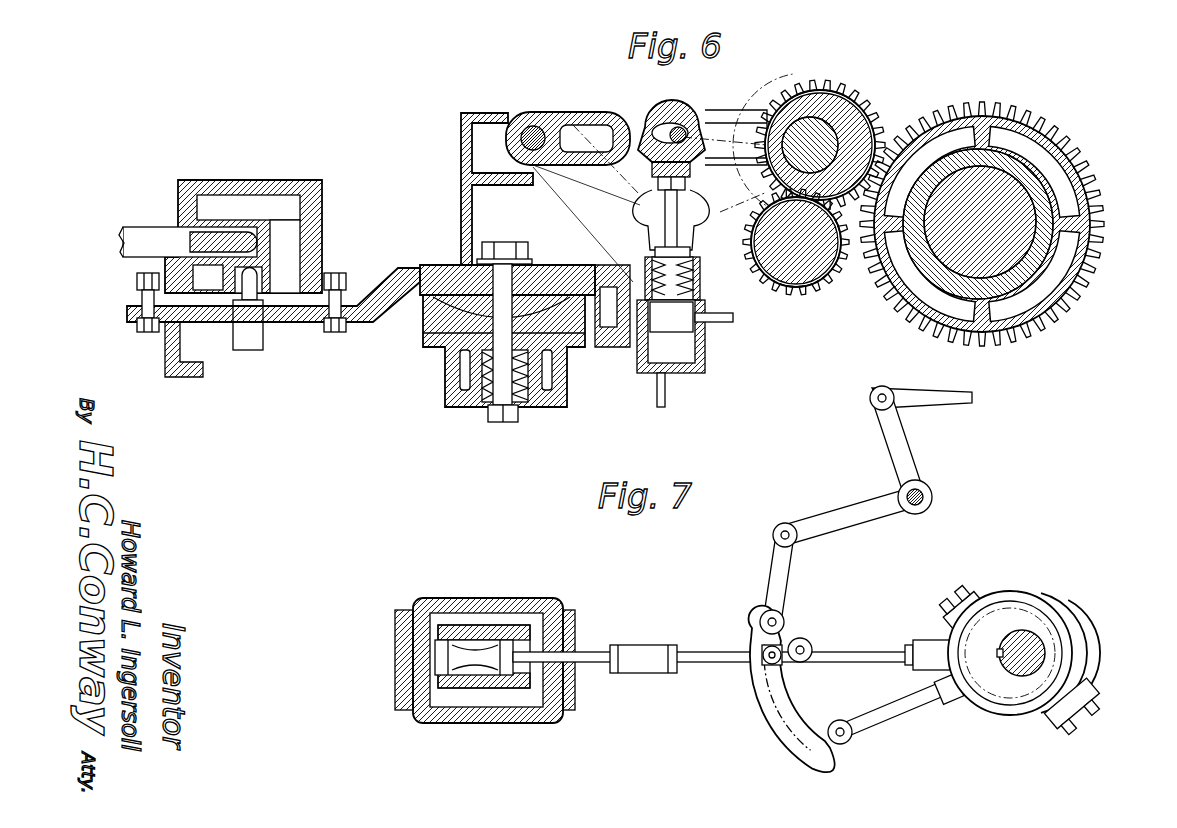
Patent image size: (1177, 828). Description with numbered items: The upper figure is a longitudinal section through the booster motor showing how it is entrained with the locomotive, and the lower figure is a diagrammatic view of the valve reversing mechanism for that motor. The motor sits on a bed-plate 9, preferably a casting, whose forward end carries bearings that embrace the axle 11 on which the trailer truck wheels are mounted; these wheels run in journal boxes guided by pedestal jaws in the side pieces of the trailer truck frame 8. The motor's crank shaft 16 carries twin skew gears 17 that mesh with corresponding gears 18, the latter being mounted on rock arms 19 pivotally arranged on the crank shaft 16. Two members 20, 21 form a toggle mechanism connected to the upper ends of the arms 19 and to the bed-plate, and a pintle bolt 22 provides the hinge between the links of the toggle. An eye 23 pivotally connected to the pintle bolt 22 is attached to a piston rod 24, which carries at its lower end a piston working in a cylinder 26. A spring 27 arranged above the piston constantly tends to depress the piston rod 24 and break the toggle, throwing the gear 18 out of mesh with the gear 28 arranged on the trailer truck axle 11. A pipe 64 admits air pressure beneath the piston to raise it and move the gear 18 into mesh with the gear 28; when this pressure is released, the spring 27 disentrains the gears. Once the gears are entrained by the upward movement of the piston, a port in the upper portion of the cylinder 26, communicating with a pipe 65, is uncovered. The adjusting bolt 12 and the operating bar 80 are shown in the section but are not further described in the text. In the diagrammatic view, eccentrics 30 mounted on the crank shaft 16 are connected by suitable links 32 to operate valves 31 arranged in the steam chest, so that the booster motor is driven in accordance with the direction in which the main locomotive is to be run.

In FIG. 6, the trailer truck frame 8 is at (448, 393).
In FIG. 6, the bed-plate 9 is at (458, 239).
In FIG. 6, the axle 11 is at (1010, 207).
In FIG. 6, the adjusting bolt 12 is at (553, 292).
In FIG. 6, the crank shaft 16 is at (822, 298).
In FIG. 7, the crank shaft 16 is at (1028, 637).
In FIG. 6, the twin skew gears 17 is at (790, 302).
In FIG. 6, the gears 18 is at (845, 92).
In FIG. 6, the rock arms 19 is at (700, 207).
In FIG. 6, the toggle member 20 is at (722, 118).
In FIG. 6, the toggle member 21 is at (566, 112).
In FIG. 6, the pintle bolt 22 is at (696, 115).
In FIG. 6, the eye 23 is at (657, 118).
In FIG. 6, the piston rod 24 is at (680, 246).
In FIG. 6, the cylinder 26 is at (706, 352).
In FIG. 6, the spring 27 is at (700, 288).
In FIG. 6, the gear 28 is at (963, 106).
In FIG. 7, the eccentrics 30 is at (1042, 590).
In FIG. 7, the valves 31 is at (485, 660).
In FIG. 7, the links 32 is at (866, 518).
In FIG. 6, the pipe 64 is at (655, 402).
In FIG. 6, the pipe 65 is at (733, 323).
In FIG. 6, the operating bar 80 is at (137, 235).